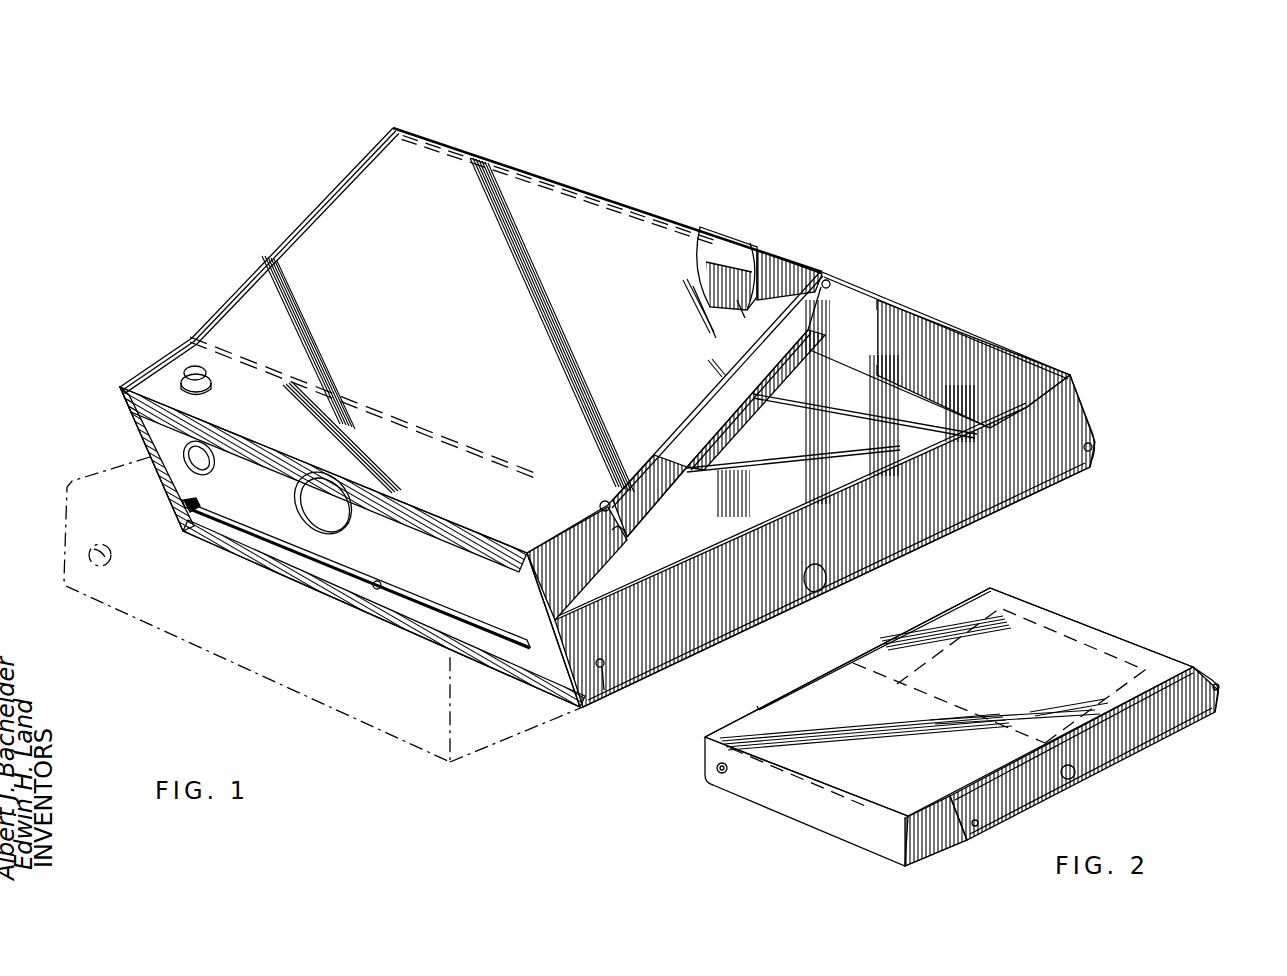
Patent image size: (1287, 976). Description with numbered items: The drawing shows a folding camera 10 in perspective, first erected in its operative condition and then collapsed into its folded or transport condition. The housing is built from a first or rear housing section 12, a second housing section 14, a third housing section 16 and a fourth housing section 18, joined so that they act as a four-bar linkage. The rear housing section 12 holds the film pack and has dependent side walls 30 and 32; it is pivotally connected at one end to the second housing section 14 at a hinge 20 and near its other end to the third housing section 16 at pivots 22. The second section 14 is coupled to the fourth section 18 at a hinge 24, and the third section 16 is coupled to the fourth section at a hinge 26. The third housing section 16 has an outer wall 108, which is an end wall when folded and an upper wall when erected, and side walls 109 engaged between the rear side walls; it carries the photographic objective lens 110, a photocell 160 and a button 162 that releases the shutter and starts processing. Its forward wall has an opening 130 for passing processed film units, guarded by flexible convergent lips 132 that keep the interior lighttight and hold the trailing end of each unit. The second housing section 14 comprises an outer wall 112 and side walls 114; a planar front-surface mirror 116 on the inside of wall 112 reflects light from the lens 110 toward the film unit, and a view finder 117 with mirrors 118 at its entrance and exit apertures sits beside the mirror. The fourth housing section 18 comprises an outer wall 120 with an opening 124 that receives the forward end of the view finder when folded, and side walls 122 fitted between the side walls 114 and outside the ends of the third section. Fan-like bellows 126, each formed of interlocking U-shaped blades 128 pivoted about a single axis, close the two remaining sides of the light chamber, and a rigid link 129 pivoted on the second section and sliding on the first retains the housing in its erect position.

In FIG. 1, the camera 10 is at (962, 312).
In FIG. 2, the camera 10 is at (1117, 613).
In FIG. 1, the first housing section 12 is at (712, 621).
In FIG. 2, the first housing section 12 is at (1103, 750).
In FIG. 1, the second housing section 14 is at (993, 368).
In FIG. 2, the second housing section 14 is at (1157, 667).
In FIG. 1, the third housing section 16 is at (470, 613).
In FIG. 2, the third housing section 16 is at (755, 806).
In FIG. 1, the fourth housing section 18 is at (500, 190).
In FIG. 2, the fourth housing section 18 is at (838, 690).
In FIG. 1, the hinge 20 is at (1095, 447).
In FIG. 2, the hinge 20 is at (1217, 680).
In FIG. 1, the pivots 22 is at (603, 672).
In FIG. 2, the pivots 22 is at (980, 827).
In FIG. 1, the hinge 24 is at (572, 190).
In FIG. 2, the hinge 24 is at (890, 680).
In FIG. 1, the hinge 26 is at (408, 416).
In FIG. 2, the hinge 26 is at (773, 760).
In FIG. 1, the side wall 30 is at (1010, 487).
In FIG. 2, the side wall 30 is at (1160, 720).
In FIG. 2, the side wall 32 is at (935, 615).
In FIG. 1, the outer wall 108 is at (300, 385).
In FIG. 2, the outer wall 108 is at (847, 837).
In FIG. 1, the side walls 109 is at (618, 527).
In FIG. 2, the side walls 109 is at (927, 843).
In FIG. 1, the photographic objective lens 110 is at (305, 508).
In FIG. 1, the outer wall 112 is at (878, 298).
In FIG. 2, the outer wall 112 is at (1023, 620).
In FIG. 1, the side walls 114 is at (862, 340).
In FIG. 2, the mirror 116 is at (1063, 647).
In FIG. 1, the view finder 117 is at (770, 262).
In FIG. 1, the mirrors 118 is at (708, 305).
In FIG. 1, the outer wall 120 is at (340, 195).
In FIG. 2, the outer wall 120 is at (740, 733).
In FIG. 1, the side walls 122 is at (697, 430).
In FIG. 1, the opening 124 is at (737, 310).
In FIG. 1, the fan-like bellows 126 is at (905, 448).
In FIG. 1, the interlocking blades 128 is at (843, 423).
In FIG. 1, the rigid link 129 is at (815, 580).
In FIG. 2, the rigid link 129 is at (1087, 777).
In FIG. 1, the opening 130 is at (382, 583).
In FIG. 1, the flexible convergent lips 132 is at (350, 593).
In FIG. 1, the photocell 160 is at (183, 452).
In FIG. 1, the button 162 is at (195, 367).
In FIG. 2, the button 162 is at (713, 770).